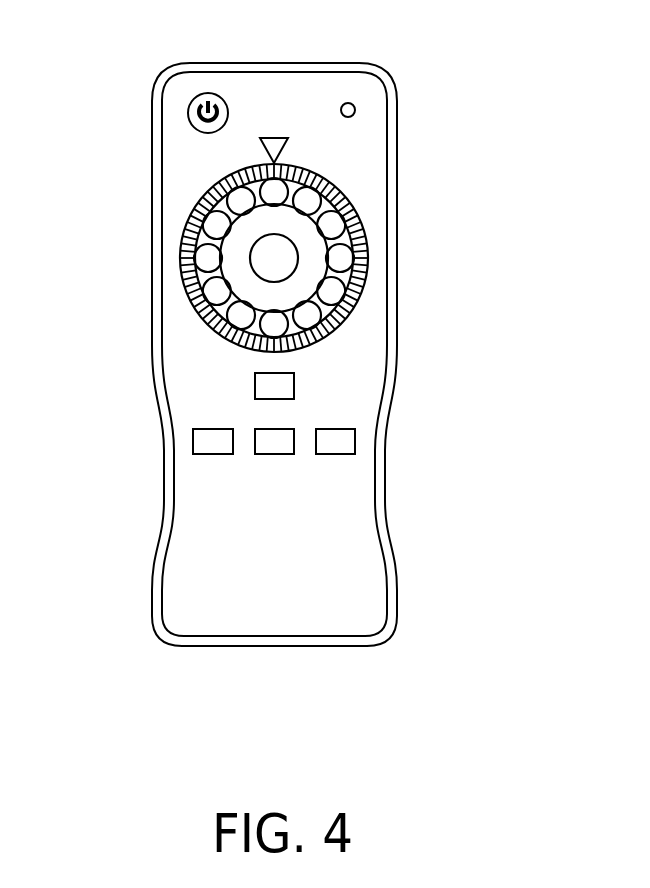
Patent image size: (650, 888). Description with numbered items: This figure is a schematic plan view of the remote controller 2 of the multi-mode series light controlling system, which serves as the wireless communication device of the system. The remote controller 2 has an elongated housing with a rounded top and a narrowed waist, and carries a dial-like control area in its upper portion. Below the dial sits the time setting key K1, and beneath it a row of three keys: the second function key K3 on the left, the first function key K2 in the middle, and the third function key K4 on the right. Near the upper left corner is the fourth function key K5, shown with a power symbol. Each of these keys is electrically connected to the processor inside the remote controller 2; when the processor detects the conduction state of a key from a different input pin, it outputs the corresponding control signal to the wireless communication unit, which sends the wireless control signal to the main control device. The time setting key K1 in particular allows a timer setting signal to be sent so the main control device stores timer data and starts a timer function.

The remote controller 2 is at (397, 141).
The time setting key K1 is at (294, 385).
The first function key K2 is at (285, 452).
The second function key K3 is at (193, 447).
The third function key K4 is at (355, 441).
The fourth function key K5 is at (228, 103).